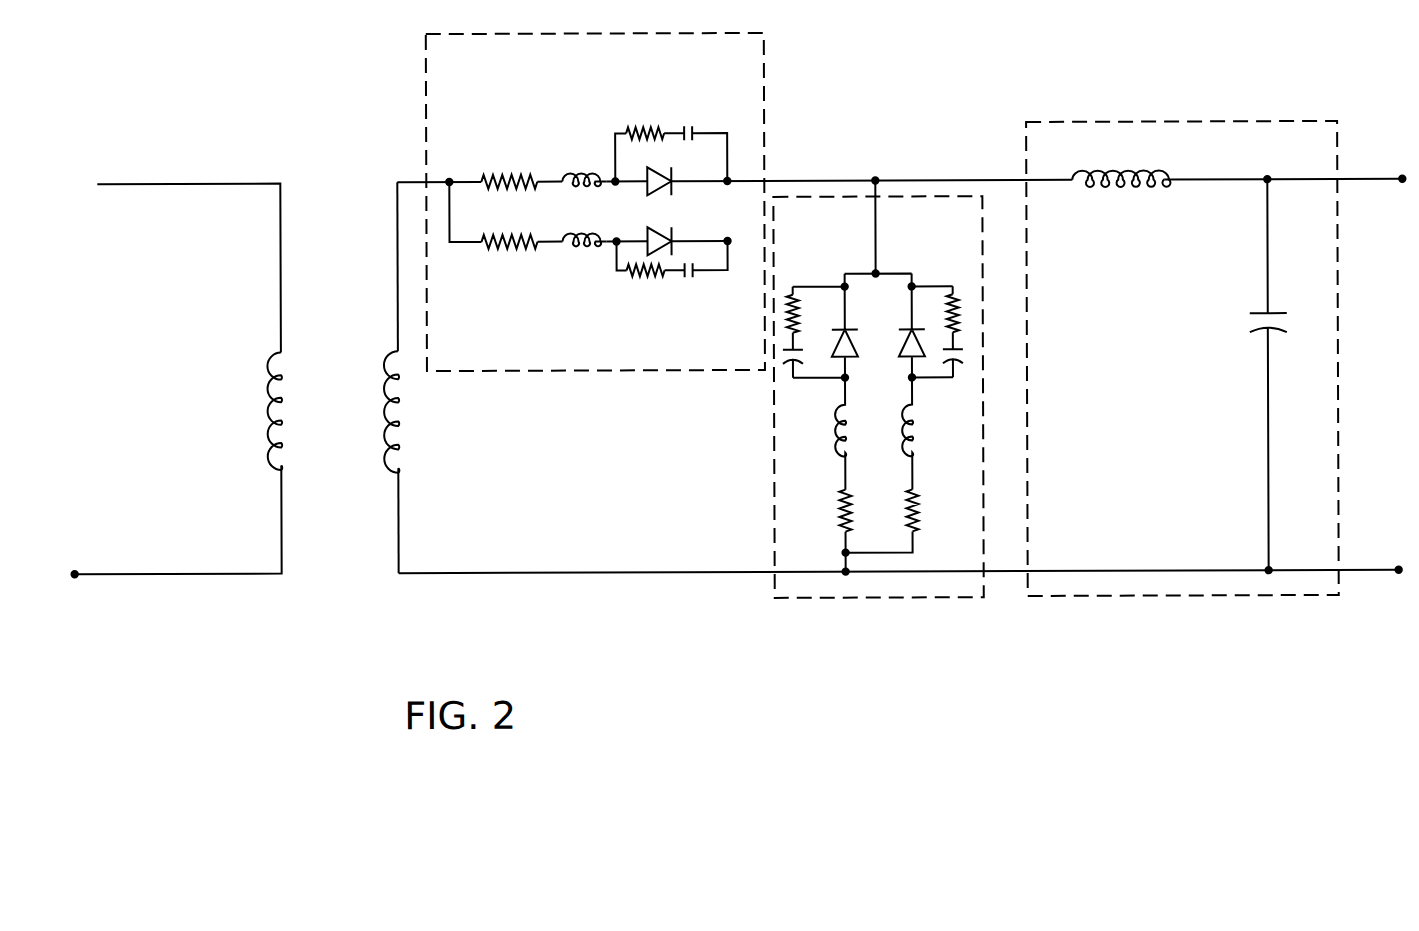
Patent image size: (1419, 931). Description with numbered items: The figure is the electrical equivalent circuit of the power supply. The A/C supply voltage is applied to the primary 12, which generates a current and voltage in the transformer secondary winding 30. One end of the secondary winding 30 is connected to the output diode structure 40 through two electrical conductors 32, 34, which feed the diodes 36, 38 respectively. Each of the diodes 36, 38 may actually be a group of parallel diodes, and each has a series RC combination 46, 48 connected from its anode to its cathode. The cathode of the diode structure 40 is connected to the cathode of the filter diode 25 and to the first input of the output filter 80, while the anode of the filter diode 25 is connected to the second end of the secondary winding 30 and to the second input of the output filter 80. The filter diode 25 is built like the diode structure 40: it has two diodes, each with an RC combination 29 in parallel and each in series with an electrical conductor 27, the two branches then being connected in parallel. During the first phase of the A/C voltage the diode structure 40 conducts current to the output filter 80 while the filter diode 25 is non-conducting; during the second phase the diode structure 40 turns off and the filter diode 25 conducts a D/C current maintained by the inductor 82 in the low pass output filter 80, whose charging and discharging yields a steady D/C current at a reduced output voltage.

The primary 12 is at (176, 381).
The transformer secondary winding 30 is at (432, 380).
The output diode structure 40 is at (478, 33).
The electrical conductor 34 is at (506, 172).
The electrical conductor 32 is at (492, 249).
The series RC combination 48 is at (649, 126).
The series RC combination 46 is at (649, 284).
The diode 38 is at (678, 167).
The diode 36 is at (678, 228).
The filter diode 25 is at (940, 197).
The RC combination 29 is at (817, 286).
The electrical conductor 27 is at (856, 504).
The output filter 80 is at (1160, 600).
The inductor 82 is at (1148, 172).